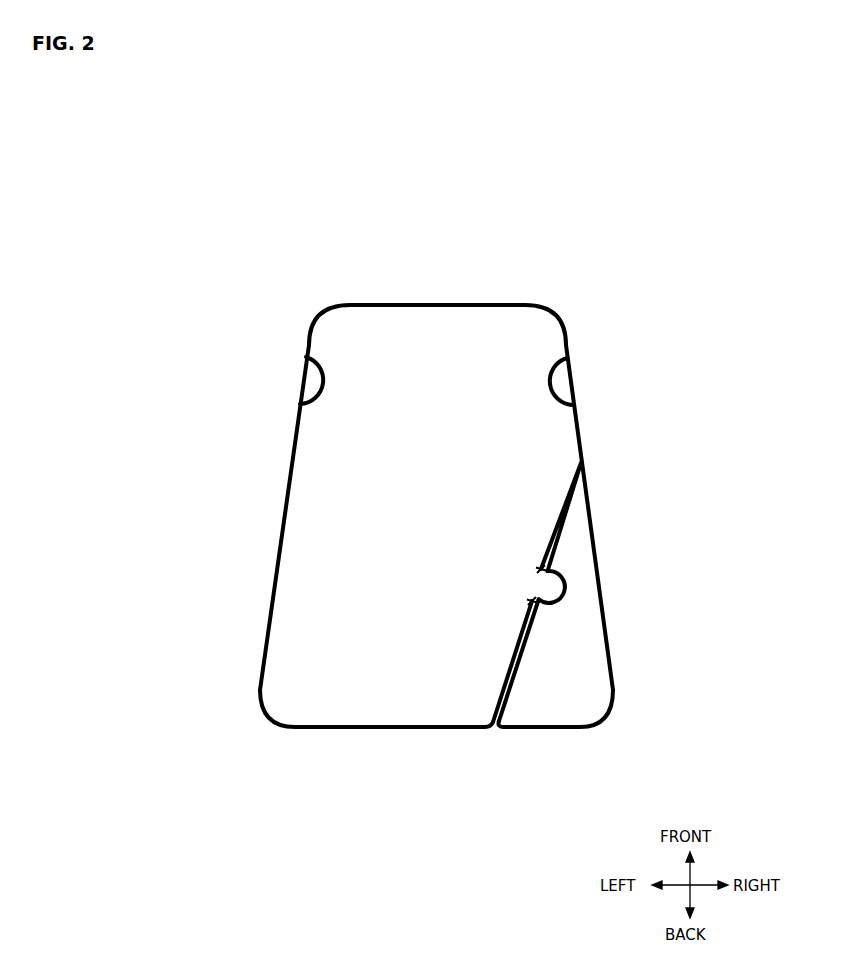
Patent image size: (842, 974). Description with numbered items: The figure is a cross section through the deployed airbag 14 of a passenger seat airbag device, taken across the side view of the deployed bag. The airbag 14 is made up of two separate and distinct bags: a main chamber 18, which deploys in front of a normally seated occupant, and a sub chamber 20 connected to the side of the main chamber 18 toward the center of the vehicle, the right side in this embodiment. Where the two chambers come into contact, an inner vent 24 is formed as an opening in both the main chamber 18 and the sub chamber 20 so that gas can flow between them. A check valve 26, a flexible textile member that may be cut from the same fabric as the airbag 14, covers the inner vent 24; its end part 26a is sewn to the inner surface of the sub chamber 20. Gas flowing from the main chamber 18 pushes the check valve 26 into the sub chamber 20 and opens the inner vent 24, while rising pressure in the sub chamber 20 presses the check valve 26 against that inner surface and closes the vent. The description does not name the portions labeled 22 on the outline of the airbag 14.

The airbag 14 is at (305, 293).
The main chamber 18 is at (303, 443).
The sub chamber 20 is at (539, 731).
The notch 22 is at (304, 382).
The inner vent 24 is at (532, 583).
The check valve 26 is at (568, 588).
The end part 26a is at (552, 562).